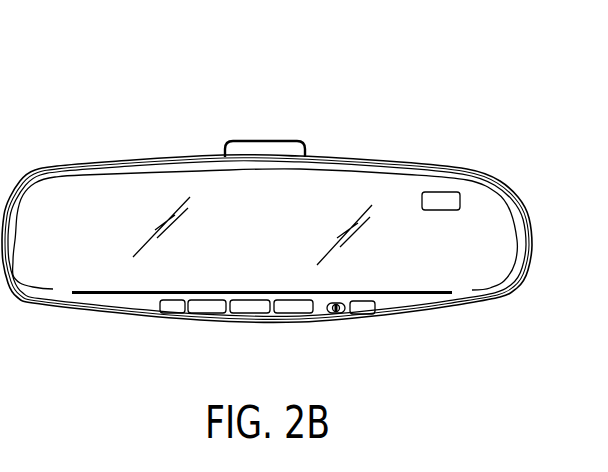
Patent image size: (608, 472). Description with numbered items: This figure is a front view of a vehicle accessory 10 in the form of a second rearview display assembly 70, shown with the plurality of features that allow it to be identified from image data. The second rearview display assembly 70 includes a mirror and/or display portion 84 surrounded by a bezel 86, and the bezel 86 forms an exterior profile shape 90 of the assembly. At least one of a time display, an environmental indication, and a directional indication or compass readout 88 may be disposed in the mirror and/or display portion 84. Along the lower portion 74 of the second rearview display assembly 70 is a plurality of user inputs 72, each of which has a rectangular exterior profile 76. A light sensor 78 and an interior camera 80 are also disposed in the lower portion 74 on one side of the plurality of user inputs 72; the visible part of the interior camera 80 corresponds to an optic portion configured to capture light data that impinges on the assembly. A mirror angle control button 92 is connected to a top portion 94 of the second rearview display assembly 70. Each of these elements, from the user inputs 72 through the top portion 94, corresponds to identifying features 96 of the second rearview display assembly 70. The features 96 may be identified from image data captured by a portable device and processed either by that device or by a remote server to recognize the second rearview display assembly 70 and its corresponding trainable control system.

The vehicle accessory 10 is at (402, 125).
The second rearview display assembly 70 is at (82, 165).
The plurality of user inputs 72 is at (293, 314).
The lower portion 74 is at (418, 312).
The rectangular exterior profile 76 is at (236, 306).
The light sensor 78 is at (336, 314).
The interior camera 80 is at (363, 314).
The mirror and/or display portion 84 is at (68, 261).
The bezel 86 is at (500, 183).
The compass readout 88 is at (458, 208).
The exterior profile shape 90 is at (522, 288).
The mirror angle control button 92 is at (276, 152).
The top portion 94 is at (210, 148).
The identifying features 96 is at (482, 99).